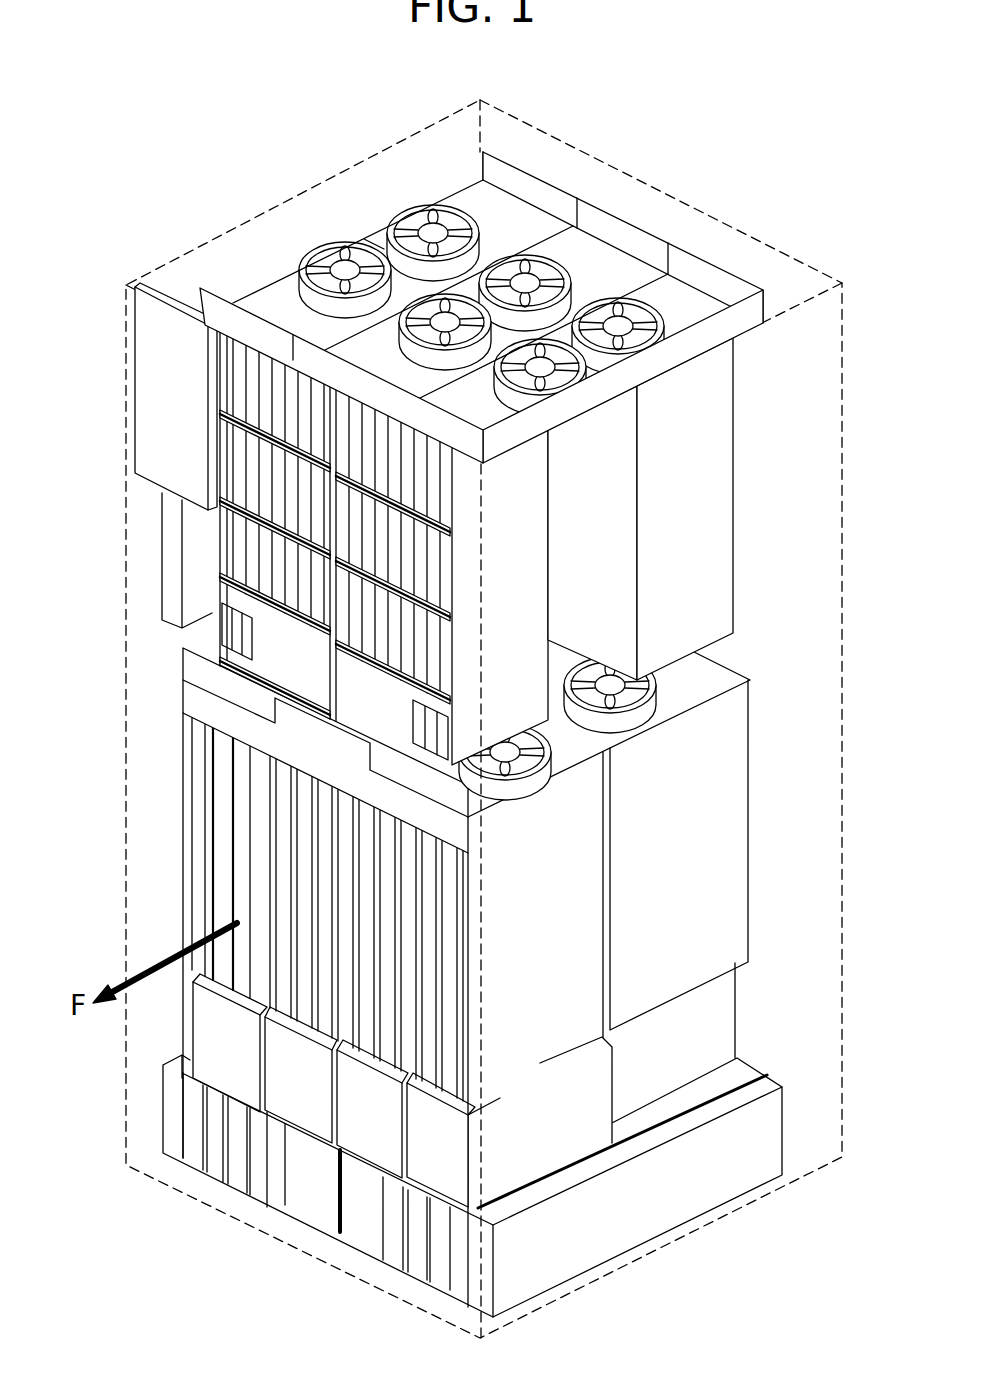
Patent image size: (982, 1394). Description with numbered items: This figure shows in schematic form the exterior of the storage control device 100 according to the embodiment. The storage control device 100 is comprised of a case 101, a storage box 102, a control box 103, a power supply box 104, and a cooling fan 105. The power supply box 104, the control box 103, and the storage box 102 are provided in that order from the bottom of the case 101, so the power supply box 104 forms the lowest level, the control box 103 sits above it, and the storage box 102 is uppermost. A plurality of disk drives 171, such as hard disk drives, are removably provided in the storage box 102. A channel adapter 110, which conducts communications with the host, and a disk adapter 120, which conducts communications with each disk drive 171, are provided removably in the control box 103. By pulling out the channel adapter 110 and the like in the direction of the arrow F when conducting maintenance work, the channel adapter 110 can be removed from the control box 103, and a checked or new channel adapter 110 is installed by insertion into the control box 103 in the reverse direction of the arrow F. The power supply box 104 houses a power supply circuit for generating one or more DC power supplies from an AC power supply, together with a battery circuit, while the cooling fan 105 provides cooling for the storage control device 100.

The storage control device 100 is at (622, 160).
The case 101 is at (740, 228).
The storage box 102 is at (520, 583).
The control box 103 is at (547, 883).
The power supply box 104 is at (553, 1147).
The cooling fan 105 is at (643, 343).
The channel adapter 110 is at (200, 836).
The disk adapter 120 is at (323, 963).
The disk drive 171 is at (237, 372).